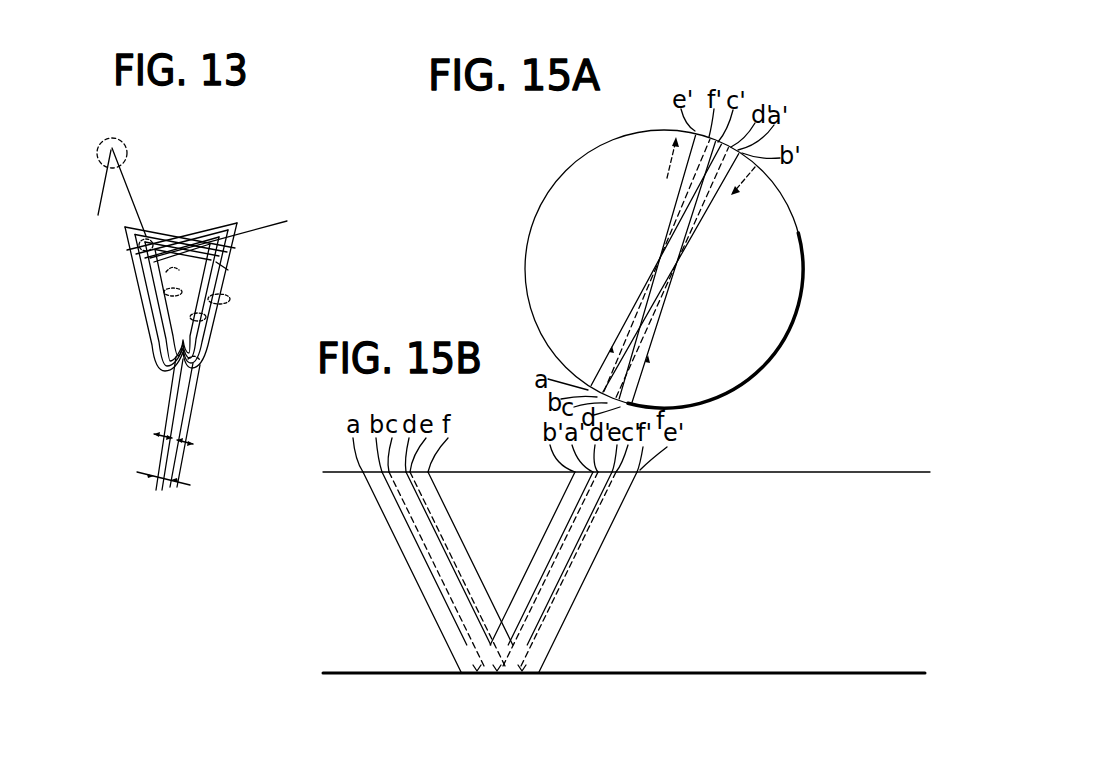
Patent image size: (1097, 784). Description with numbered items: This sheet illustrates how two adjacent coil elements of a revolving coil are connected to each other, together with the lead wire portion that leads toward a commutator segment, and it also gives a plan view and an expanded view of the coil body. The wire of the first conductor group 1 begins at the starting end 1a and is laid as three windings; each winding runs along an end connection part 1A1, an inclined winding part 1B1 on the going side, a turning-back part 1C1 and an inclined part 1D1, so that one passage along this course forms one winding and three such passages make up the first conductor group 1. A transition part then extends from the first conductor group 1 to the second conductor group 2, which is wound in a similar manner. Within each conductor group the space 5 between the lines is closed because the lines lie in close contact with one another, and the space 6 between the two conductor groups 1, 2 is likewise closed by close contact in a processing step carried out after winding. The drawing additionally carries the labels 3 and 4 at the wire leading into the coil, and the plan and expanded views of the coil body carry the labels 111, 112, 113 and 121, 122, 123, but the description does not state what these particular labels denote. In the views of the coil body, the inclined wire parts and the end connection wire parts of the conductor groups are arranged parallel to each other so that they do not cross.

In FIG. 13, the first conductor group 1 is at (231, 300).
In FIG. 13, the starting end 1a is at (270, 220).
In FIG. 13, the end connection part 1A1 is at (172, 270).
In FIG. 13, the inclined winding part 1B1 is at (170, 294).
In FIG. 13, the turning-back part 1C1 is at (198, 360).
In FIG. 13, the inclined part 1D1 is at (222, 268).
In FIG. 13, the second conductor group 2 is at (205, 319).
In FIG. 13, the solder joint 3 is at (146, 238).
In FIG. 13, the terminal 4 is at (100, 158).
In FIG. 13, the space between lines 5 is at (165, 432).
In FIG. 13, the space between conductor groups 6 is at (160, 490).
In FIG. 15B, the first reflection point 111 is at (459, 674).
In FIG. 15B, the second reflection point 112 is at (492, 676).
In FIG. 15B, the third reflection point 113 is at (533, 676).
In FIG. 15A, the first light beam 121 is at (742, 147).
In FIG. 15A, the second light beam 122 is at (727, 140).
In FIG. 15A, the third light beam 123 is at (705, 137).